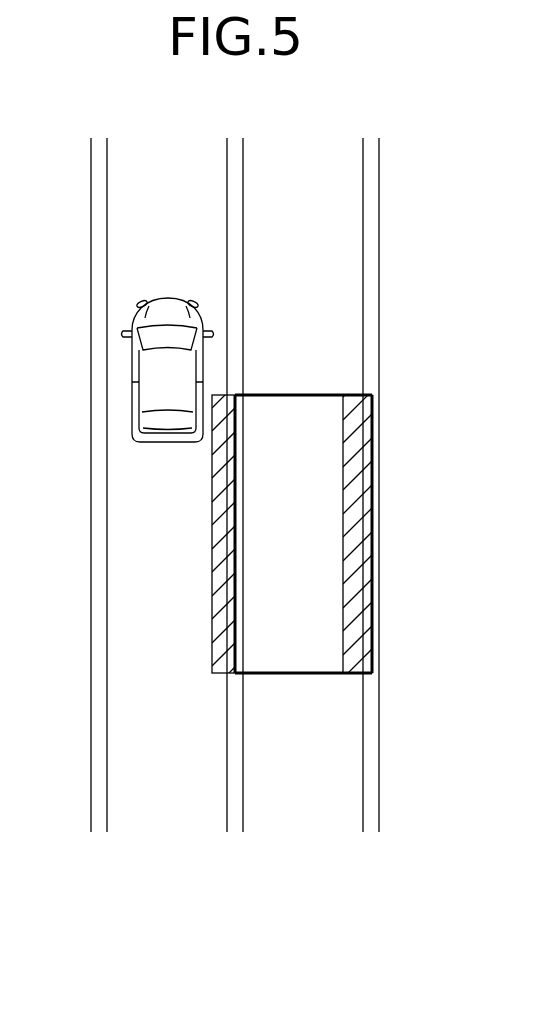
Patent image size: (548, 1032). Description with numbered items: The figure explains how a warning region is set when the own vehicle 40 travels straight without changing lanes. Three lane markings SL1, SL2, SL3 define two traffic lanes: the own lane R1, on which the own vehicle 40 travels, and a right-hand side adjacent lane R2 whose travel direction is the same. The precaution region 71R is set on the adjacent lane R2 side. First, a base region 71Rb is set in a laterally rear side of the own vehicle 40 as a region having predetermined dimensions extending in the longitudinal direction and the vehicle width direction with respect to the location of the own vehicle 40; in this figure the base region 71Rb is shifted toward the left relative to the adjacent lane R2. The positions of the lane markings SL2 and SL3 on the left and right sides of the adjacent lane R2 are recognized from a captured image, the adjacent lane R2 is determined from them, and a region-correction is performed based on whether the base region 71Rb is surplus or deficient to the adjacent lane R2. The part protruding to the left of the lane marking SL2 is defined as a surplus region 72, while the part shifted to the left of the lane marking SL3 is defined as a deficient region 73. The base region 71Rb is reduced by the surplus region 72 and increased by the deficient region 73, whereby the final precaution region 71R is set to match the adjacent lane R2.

The own vehicle 40 is at (162, 297).
The precaution region 71R is at (370, 383).
The base region 71Rb is at (342, 688).
The surplus region 72 is at (212, 642).
The deficient region 73 is at (372, 650).
The own lane R1 is at (222, 128).
The adjacent lane R2 is at (357, 128).
The lane marking SL1 is at (90, 810).
The lane marking SL2 is at (227, 810).
The lane marking SL3 is at (362, 810).